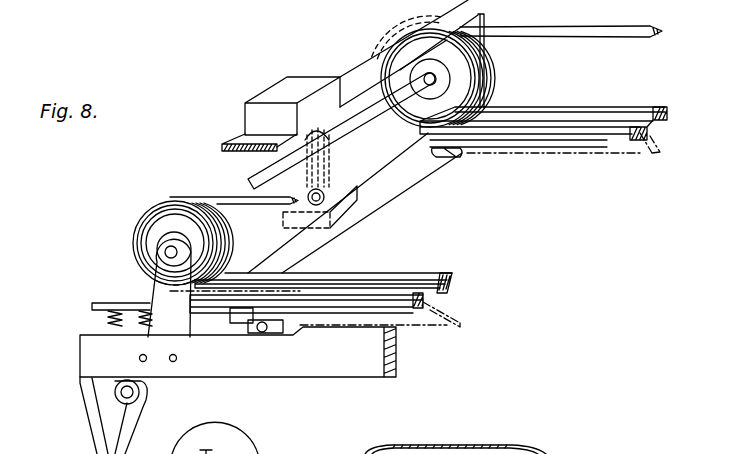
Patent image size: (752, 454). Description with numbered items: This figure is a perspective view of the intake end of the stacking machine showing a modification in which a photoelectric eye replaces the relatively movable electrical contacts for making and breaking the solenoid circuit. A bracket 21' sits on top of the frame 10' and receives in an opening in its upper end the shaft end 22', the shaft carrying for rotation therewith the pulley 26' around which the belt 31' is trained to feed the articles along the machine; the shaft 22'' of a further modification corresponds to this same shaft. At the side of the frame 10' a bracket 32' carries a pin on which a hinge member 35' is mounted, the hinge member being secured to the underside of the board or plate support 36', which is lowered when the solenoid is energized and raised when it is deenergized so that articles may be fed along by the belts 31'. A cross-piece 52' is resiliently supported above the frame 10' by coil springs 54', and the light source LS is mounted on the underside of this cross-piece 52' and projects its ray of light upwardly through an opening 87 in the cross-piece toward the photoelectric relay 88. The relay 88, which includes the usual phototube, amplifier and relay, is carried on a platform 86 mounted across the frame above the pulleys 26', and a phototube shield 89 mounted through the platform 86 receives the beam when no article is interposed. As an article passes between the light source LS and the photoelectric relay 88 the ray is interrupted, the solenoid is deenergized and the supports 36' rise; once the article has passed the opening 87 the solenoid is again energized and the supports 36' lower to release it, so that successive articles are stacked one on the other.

The frame 10' is at (361, 297).
The bracket 21' is at (169, 288).
The shaft end 22' is at (341, 131).
The shaft 22'' is at (235, 438).
The pulley 26' is at (306, 150).
The belt 31' is at (430, 159).
The bracket 32' is at (274, 347).
The hinge member 35' is at (231, 341).
The support 36' is at (562, 217).
The cross-piece 52' is at (86, 317).
The coil spring 54' is at (90, 336).
The platform 86 is at (355, 66).
The opening 87 is at (323, 192).
The photoelectric relay 88 is at (262, 95).
The phototube shield 89 is at (290, 155).
The light source LS is at (347, 207).